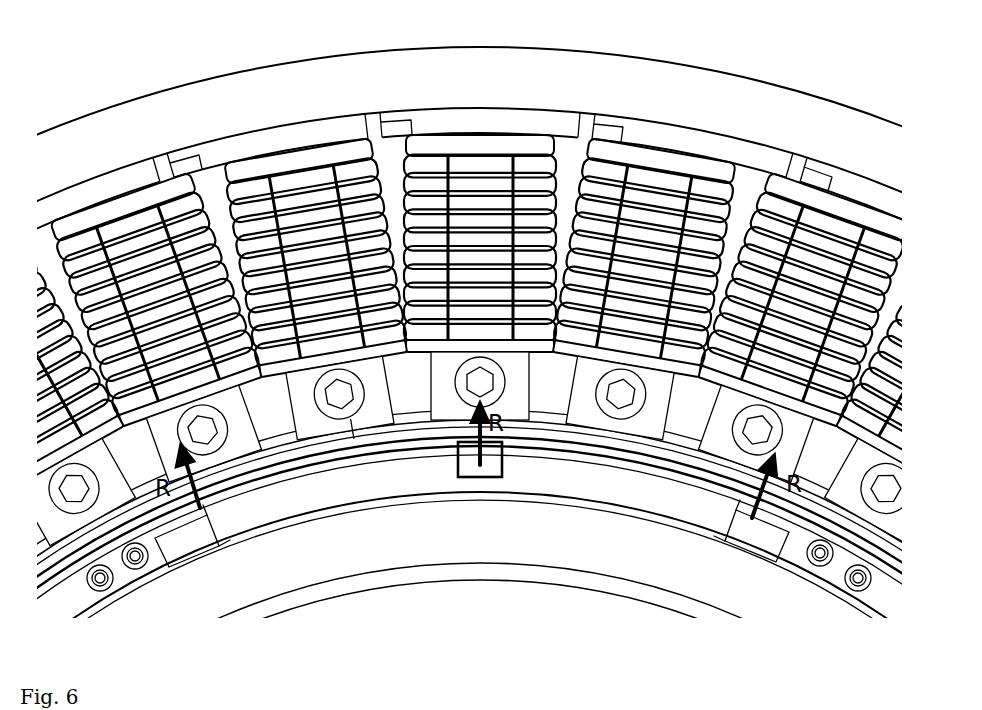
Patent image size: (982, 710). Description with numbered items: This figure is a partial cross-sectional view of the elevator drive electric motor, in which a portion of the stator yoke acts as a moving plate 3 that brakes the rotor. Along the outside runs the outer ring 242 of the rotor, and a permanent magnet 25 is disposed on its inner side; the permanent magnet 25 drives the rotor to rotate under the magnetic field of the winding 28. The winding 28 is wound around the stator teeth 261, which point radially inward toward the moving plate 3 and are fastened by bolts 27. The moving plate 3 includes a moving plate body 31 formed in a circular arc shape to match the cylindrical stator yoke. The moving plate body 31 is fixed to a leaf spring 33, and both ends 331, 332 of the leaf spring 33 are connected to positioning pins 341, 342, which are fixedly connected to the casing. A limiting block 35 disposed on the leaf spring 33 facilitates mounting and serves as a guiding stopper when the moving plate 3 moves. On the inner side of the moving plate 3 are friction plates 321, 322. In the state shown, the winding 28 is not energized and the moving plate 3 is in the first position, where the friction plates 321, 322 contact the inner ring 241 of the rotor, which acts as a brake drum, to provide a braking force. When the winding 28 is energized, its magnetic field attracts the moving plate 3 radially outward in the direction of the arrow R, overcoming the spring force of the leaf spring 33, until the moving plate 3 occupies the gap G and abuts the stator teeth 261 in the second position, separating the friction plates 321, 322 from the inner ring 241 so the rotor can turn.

The outer ring 242 is at (218, 110).
The permanent magnet 25 is at (130, 175).
The stator teeth 261 is at (325, 160).
The winding 28 is at (250, 220).
The fastening bolt 27 is at (205, 428).
The moving plate 3 is at (400, 475).
The moving plate body 31 is at (518, 478).
The leaf spring 33 is at (345, 505).
The limiting block 35 is at (470, 470).
The gap G is at (352, 437).
The inner ring 241 is at (312, 582).
The friction plate 321 is at (210, 548).
The friction plate 322 is at (735, 545).
The end of leaf spring 331 is at (140, 570).
The positioning pin 341 is at (105, 592).
The end of leaf spring 332 is at (845, 590).
The positioning pin 342 is at (800, 567).